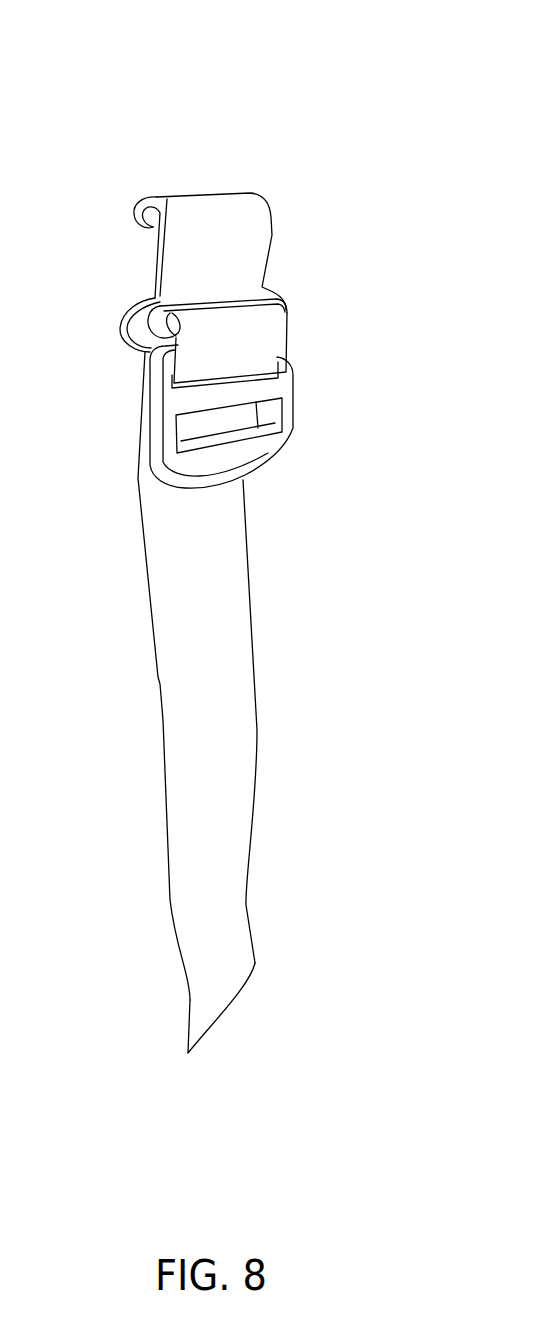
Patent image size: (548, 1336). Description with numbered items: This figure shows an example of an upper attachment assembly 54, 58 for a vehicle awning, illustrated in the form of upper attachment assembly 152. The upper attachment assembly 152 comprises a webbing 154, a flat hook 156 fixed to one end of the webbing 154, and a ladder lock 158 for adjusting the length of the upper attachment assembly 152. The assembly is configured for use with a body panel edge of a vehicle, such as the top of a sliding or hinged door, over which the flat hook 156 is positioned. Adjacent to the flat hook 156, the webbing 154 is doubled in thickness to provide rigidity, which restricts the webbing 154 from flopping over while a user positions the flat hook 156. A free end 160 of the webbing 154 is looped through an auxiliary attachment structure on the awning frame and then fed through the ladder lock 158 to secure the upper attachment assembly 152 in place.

The upper attachment assembly 54 is at (260, 581).
The upper attachment assembly 58 is at (352, 72).
The upper attachment assembly 152 is at (332, 119).
The webbing 154 is at (255, 768).
The flat hook 156 is at (197, 193).
The ladder lock 158 is at (295, 392).
The free end 160 is at (232, 1013).